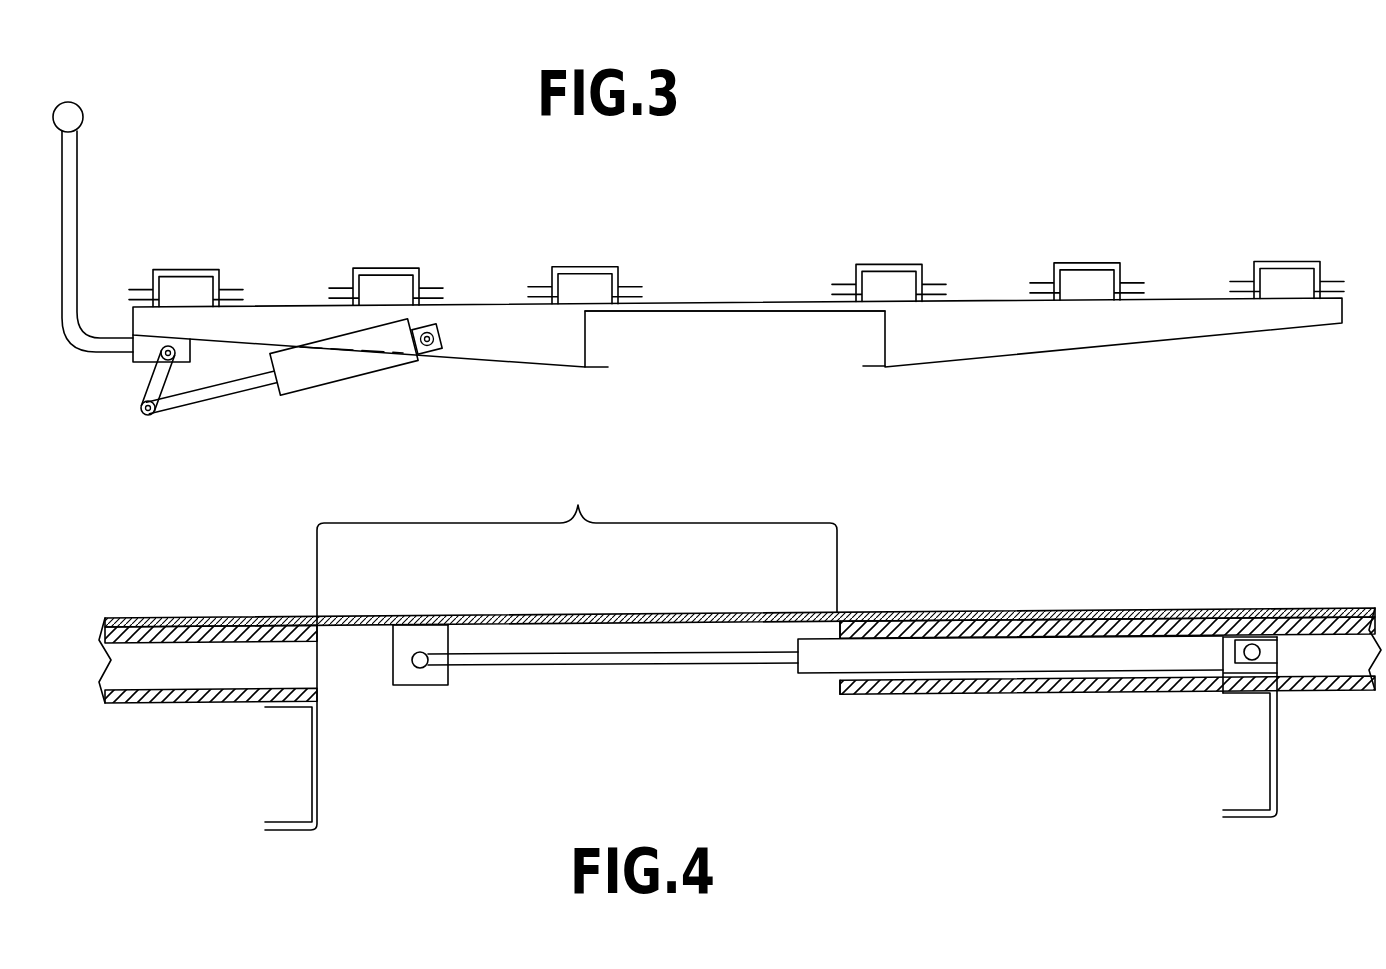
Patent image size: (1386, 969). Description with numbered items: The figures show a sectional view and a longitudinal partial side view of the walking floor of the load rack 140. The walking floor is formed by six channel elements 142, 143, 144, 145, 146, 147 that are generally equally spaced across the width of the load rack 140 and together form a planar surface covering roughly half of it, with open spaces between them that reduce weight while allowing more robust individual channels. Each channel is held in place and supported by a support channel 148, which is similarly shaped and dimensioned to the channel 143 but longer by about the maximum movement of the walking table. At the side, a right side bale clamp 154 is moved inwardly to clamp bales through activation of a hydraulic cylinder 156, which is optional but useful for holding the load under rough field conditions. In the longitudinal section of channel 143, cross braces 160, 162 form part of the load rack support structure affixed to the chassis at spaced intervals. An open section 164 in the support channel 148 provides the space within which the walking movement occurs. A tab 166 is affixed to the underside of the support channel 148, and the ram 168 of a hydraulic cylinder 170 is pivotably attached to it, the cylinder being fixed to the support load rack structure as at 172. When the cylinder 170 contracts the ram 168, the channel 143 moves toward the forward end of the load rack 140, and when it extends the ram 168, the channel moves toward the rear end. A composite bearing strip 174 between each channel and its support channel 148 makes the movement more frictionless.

In FIG. 3, the load rack 140 is at (824, 195).
In FIG. 4, the load rack 140 is at (895, 521).
In FIG. 3, the channel element 142 is at (183, 270).
In FIG. 3, the channel element 143 is at (370, 270).
In FIG. 4, the channel element 143 is at (430, 621).
In FIG. 3, the channel element 144 is at (573, 268).
In FIG. 3, the channel element 145 is at (876, 266).
In FIG. 3, the channel element 146 is at (1064, 266).
In FIG. 3, the channel element 147 is at (1262, 262).
In FIG. 3, the support channel 148 is at (485, 343).
In FIG. 4, the support channel 148 is at (223, 702).
In FIG. 3, the right side bale clamp 154 is at (78, 190).
In FIG. 4, the right side bale clamp 154 is at (1084, 610).
In FIG. 3, the hydraulic cylinder 156 is at (320, 375).
In FIG. 4, the cross brace 160 is at (320, 782).
In FIG. 4, the cross brace 162 is at (1278, 812).
In FIG. 4, the open section 164 is at (577, 538).
In FIG. 4, the tab 166 is at (435, 682).
In FIG. 4, the ram 168 is at (545, 666).
In FIG. 4, the hydraulic cylinder 170 is at (812, 675).
In FIG. 4, the cylinder fixing point 172 is at (1261, 652).
In FIG. 4, the composite bearing strip 174 is at (172, 618).